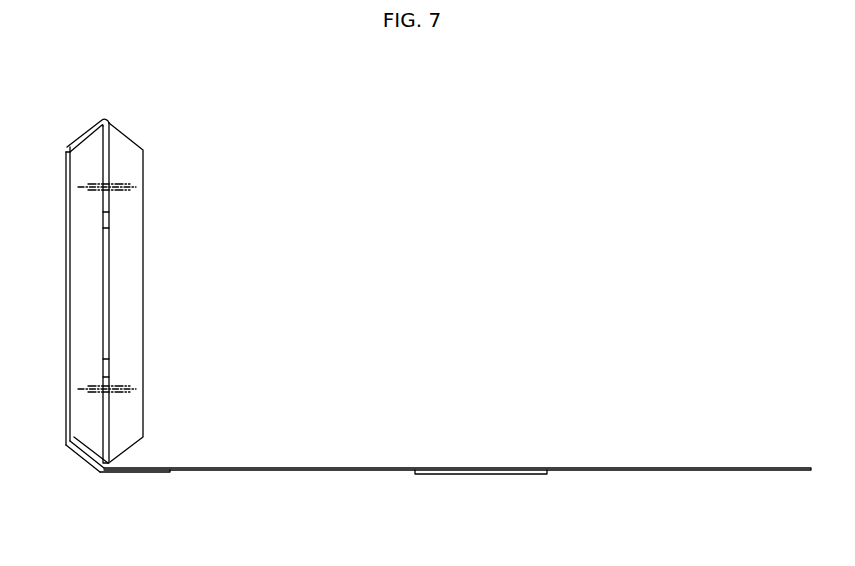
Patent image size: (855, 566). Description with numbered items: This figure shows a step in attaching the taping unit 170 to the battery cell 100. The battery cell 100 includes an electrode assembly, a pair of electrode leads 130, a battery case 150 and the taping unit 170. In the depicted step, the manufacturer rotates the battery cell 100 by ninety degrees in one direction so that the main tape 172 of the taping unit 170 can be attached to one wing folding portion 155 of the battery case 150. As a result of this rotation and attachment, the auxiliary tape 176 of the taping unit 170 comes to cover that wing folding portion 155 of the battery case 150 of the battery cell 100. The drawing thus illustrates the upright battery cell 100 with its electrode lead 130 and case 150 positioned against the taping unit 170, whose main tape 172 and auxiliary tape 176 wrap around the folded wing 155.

The battery cell 100 is at (61, 109).
The electrode lead 130 is at (106, 293).
The battery case 150 is at (137, 213).
The wing folding portion 155 is at (87, 452).
The taping unit 170 is at (410, 490).
The main tape 172 is at (65, 242).
The auxiliary tape 176 is at (133, 473).